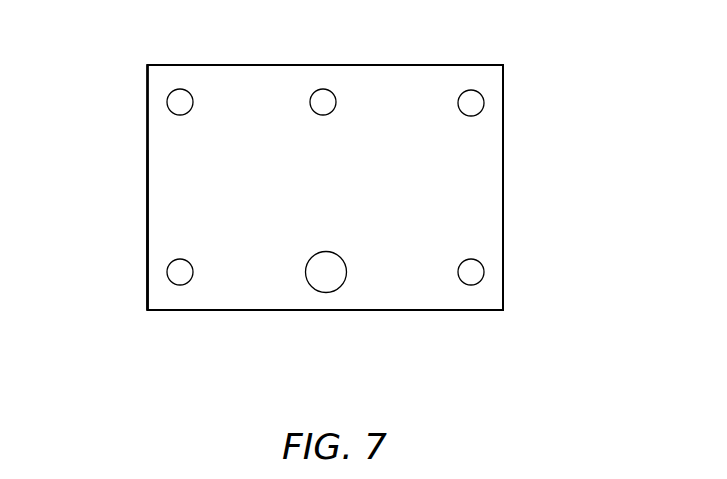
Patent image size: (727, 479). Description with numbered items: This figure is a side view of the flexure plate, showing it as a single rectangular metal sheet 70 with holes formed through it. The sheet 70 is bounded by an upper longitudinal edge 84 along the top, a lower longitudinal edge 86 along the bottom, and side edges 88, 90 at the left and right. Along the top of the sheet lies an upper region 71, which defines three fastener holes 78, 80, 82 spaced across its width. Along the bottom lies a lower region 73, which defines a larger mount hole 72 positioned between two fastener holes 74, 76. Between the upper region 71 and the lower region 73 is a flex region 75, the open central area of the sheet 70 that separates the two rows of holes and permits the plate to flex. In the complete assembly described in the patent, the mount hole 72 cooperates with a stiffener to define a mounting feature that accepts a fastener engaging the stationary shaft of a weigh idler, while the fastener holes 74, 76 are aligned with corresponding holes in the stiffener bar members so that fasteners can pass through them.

The metal sheet 70 is at (658, 65).
The upper region 71 is at (146, 100).
The mount hole 72 is at (342, 291).
The lower region 73 is at (146, 274).
The fastener hole 74 is at (487, 271).
The flex region 75 is at (217, 177).
The fastener hole 76 is at (194, 284).
The fastener hole 78 is at (192, 91).
The fastener hole 80 is at (323, 88).
The fastener hole 82 is at (487, 105).
The upper longitudinal edge 84 is at (462, 64).
The lower longitudinal edge 86 is at (181, 312).
The side edge 88 is at (146, 212).
The side edge 90 is at (504, 176).